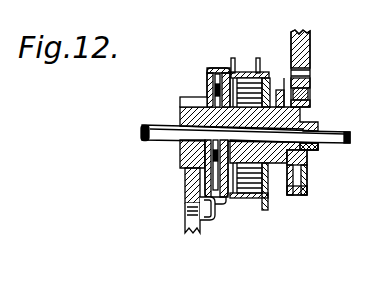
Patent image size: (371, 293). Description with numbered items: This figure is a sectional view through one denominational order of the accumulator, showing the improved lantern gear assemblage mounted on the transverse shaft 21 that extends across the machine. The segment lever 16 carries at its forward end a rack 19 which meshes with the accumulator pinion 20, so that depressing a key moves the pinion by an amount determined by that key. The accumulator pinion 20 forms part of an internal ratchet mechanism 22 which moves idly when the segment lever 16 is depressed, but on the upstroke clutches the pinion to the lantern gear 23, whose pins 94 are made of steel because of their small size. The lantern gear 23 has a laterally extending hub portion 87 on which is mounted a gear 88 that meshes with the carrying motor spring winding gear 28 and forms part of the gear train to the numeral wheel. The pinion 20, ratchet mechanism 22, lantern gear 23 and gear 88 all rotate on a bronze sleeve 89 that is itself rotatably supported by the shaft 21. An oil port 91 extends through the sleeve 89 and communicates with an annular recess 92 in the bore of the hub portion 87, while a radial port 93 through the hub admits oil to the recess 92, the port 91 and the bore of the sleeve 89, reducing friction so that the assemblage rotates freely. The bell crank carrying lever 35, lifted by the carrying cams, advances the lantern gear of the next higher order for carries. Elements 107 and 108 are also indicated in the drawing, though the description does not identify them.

The segment lever 16 is at (183, 207).
The rack 19 is at (186, 178).
The accumulator pinion 20 is at (180, 108).
The transverse shaft 21 is at (337, 144).
The internal ratchet mechanism 22 is at (213, 67).
The lantern gear 23 is at (268, 202).
The carrying motor spring winding gear 28 is at (311, 50).
The bell crank carrying lever 35 is at (214, 219).
The hub portion 87 is at (280, 97).
The gear 88 is at (311, 97).
The sleeve 89 is at (318, 150).
The oil port 91 is at (183, 160).
The annular recess 92 is at (197, 99).
The radial port 93 is at (207, 93).
The pins 94 is at (246, 72).
The member 107 is at (176, 3).
The member 108 is at (198, 3).